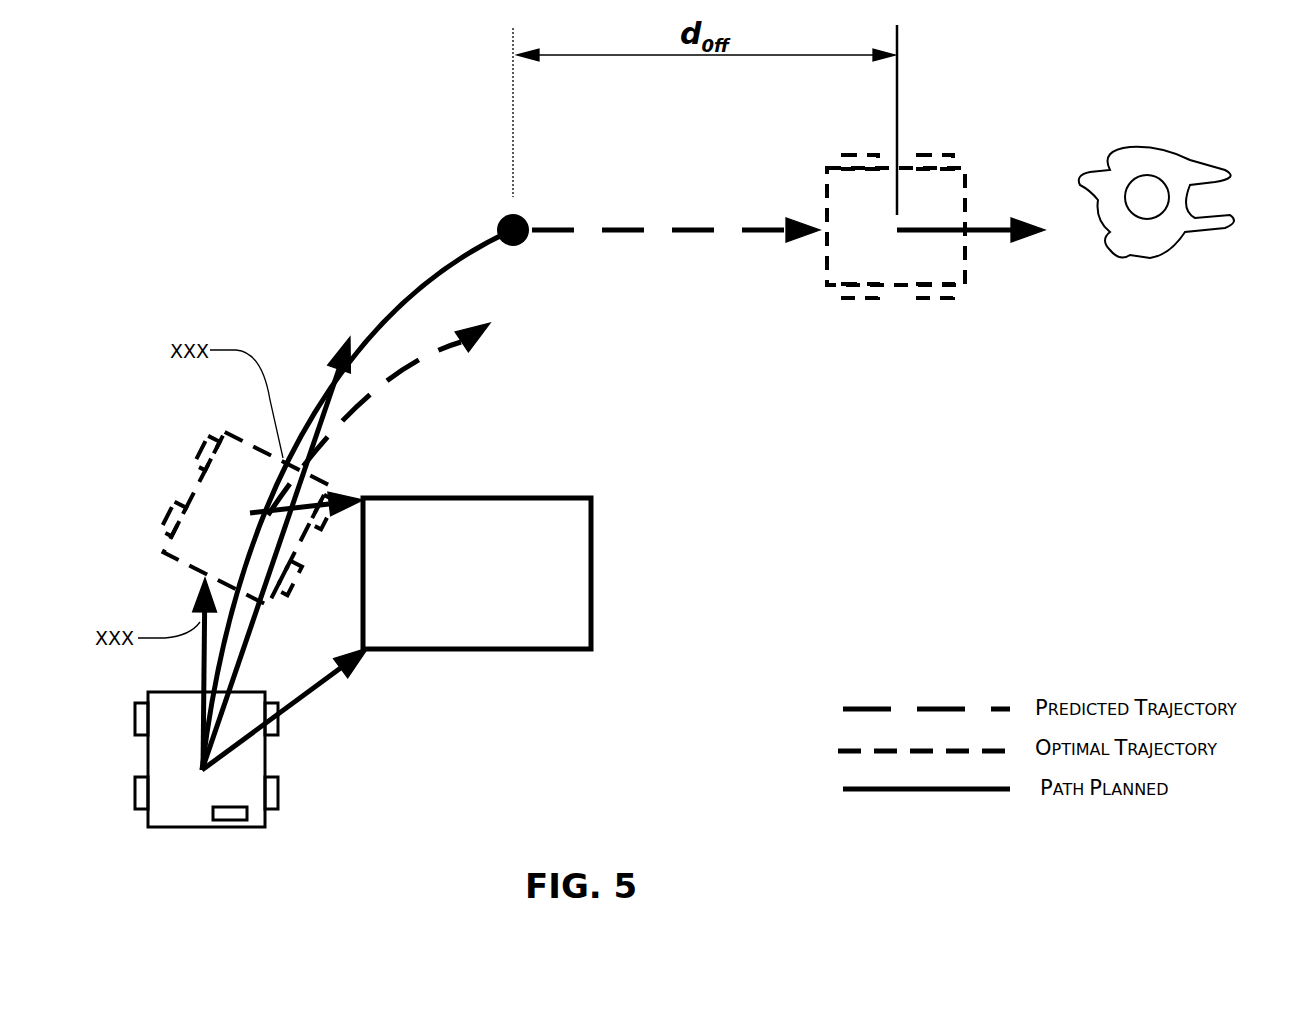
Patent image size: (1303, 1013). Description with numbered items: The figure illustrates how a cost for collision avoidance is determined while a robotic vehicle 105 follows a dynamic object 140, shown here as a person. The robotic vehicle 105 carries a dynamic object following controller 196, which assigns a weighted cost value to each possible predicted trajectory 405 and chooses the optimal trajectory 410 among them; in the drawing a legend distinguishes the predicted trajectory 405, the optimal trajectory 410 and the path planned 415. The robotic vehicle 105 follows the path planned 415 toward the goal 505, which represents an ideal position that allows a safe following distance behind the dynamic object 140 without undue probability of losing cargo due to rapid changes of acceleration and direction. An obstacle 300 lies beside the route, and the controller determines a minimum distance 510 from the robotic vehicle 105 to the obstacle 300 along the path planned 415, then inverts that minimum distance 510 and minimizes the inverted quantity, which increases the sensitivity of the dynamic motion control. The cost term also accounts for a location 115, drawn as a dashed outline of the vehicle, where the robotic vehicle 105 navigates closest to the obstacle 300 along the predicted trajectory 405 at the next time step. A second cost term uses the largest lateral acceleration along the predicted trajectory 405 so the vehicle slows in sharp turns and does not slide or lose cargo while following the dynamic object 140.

The robotic vehicle 105 is at (148, 760).
The location 115 is at (195, 480).
The dynamic object 140 is at (1162, 222).
The dynamic object following controller 196 is at (222, 820).
The obstacle 300 is at (477, 573).
The predicted trajectory 405 is at (340, 423).
The optimal trajectory 410 is at (845, 748).
The path planned 415 is at (407, 305).
The goal 505 is at (513, 213).
The minimum distance 510 is at (312, 698).